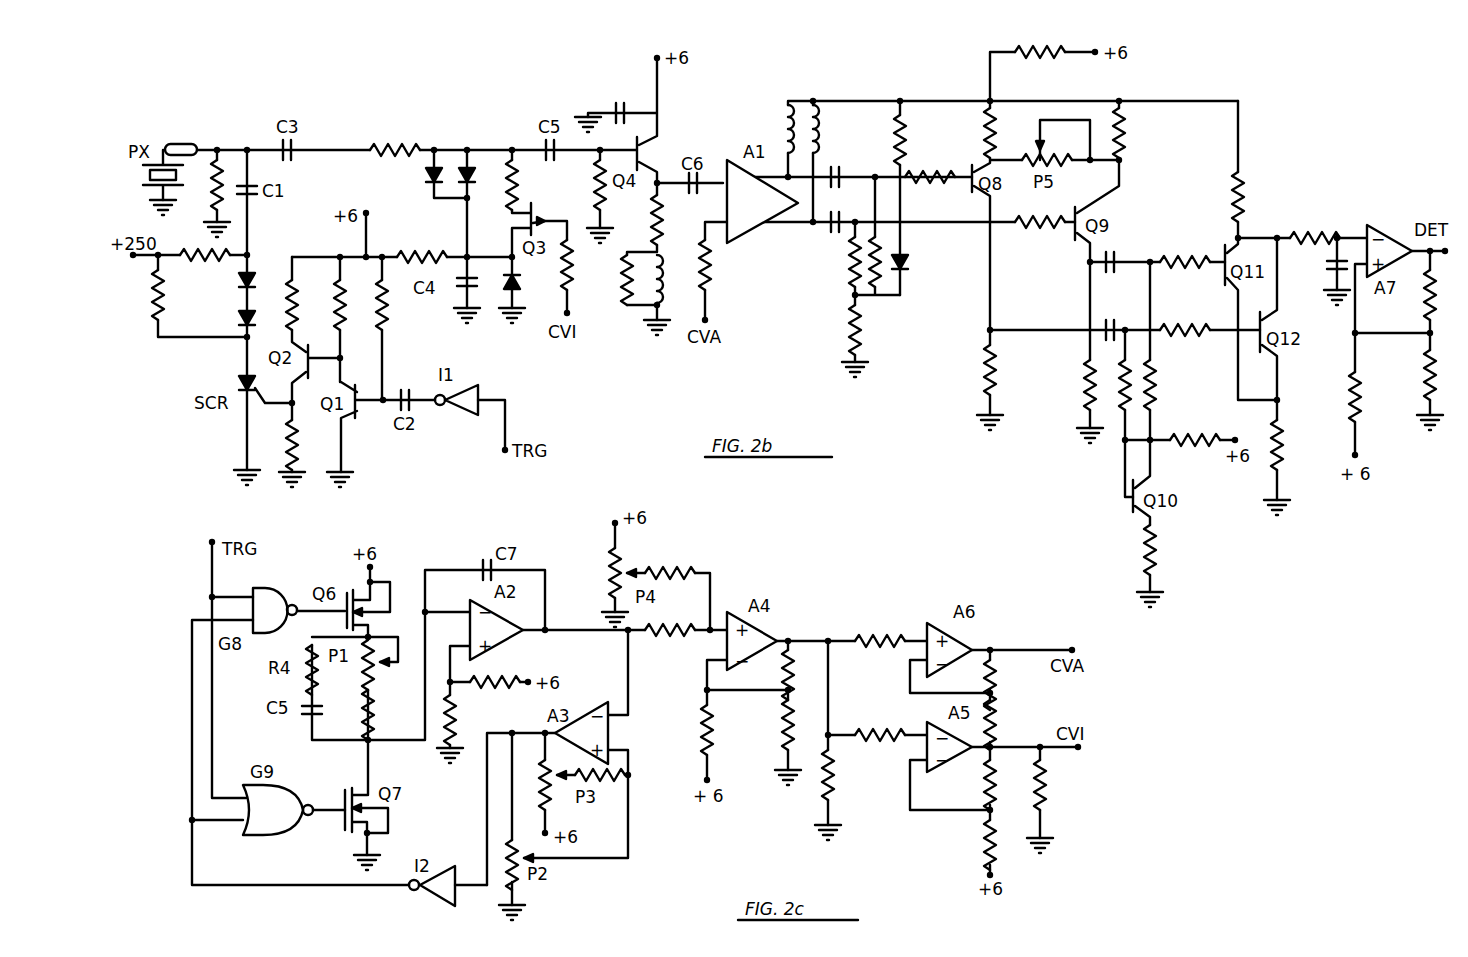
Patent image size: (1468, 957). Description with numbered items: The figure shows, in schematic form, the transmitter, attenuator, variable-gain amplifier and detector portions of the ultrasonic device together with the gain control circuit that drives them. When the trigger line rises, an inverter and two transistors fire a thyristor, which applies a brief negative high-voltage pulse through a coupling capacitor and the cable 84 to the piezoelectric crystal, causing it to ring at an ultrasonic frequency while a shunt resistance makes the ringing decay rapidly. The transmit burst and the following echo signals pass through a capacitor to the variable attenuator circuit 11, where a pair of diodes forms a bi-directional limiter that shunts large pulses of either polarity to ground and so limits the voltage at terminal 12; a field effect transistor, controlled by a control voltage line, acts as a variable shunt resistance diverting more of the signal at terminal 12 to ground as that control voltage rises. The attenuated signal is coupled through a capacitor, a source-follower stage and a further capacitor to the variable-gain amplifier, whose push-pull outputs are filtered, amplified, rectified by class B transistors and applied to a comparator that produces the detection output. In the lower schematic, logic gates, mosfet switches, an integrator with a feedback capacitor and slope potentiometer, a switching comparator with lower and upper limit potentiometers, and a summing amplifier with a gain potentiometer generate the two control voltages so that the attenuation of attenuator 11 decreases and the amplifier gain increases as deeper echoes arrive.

The cable 84 is at (185, 145).
The terminal 12 is at (467, 150).
The variable attenuator circuit 11 is at (494, 235).